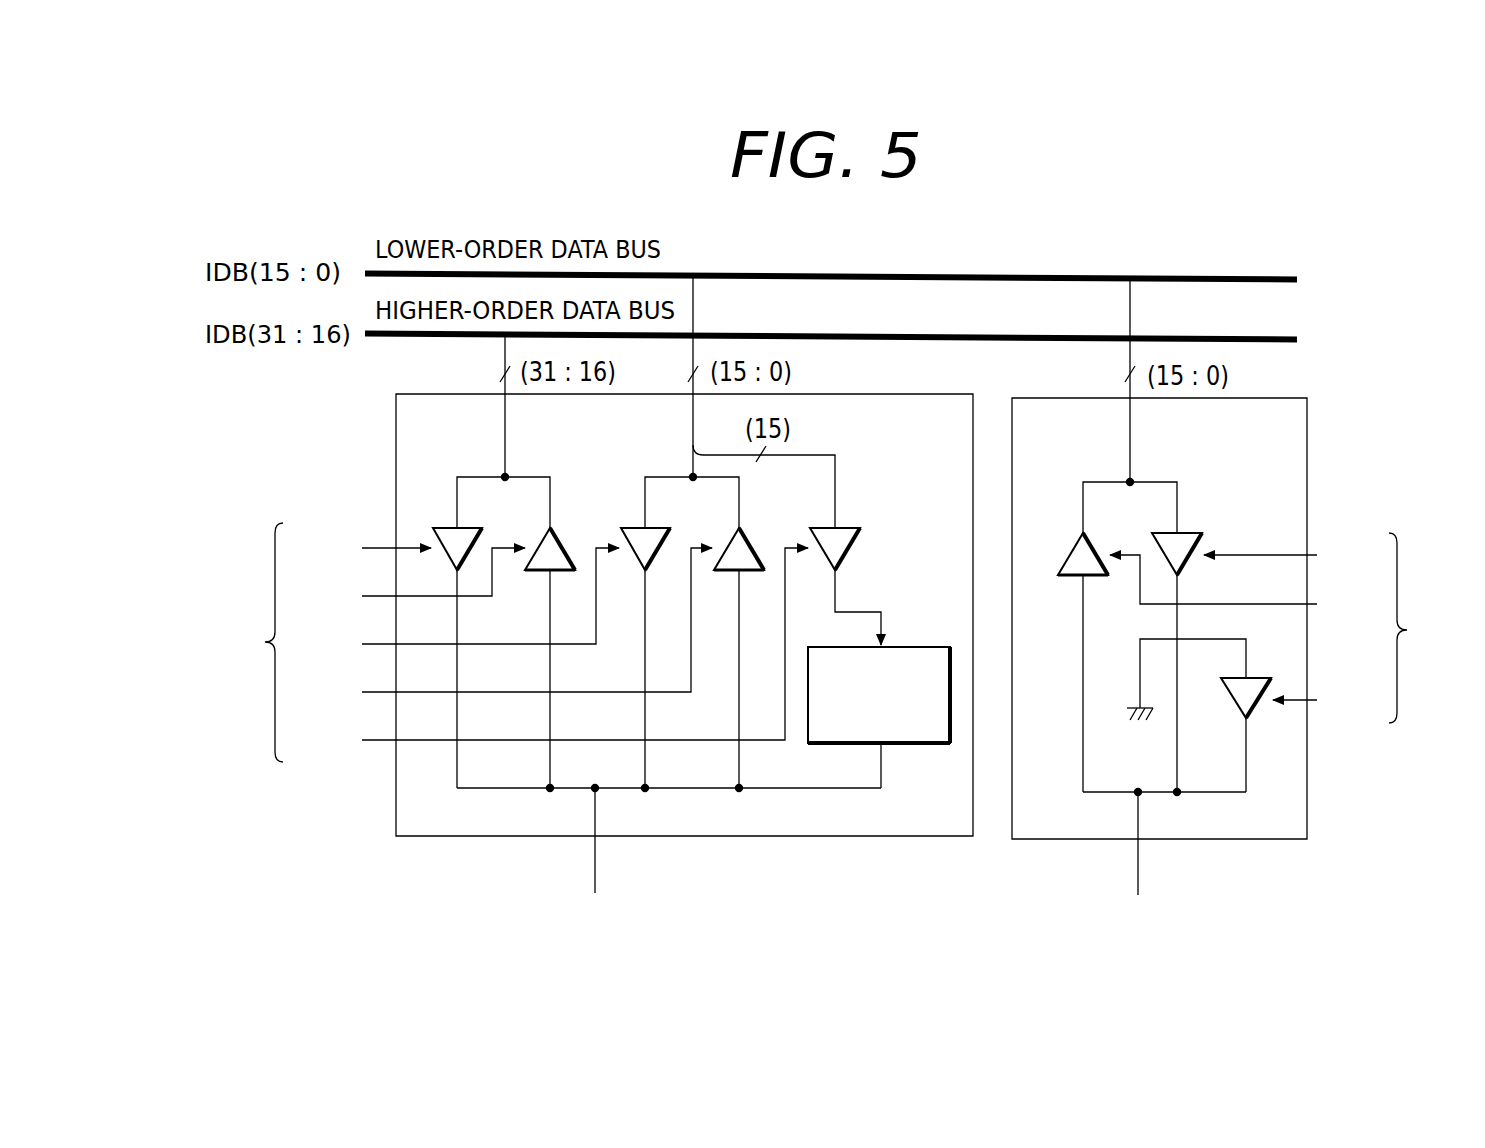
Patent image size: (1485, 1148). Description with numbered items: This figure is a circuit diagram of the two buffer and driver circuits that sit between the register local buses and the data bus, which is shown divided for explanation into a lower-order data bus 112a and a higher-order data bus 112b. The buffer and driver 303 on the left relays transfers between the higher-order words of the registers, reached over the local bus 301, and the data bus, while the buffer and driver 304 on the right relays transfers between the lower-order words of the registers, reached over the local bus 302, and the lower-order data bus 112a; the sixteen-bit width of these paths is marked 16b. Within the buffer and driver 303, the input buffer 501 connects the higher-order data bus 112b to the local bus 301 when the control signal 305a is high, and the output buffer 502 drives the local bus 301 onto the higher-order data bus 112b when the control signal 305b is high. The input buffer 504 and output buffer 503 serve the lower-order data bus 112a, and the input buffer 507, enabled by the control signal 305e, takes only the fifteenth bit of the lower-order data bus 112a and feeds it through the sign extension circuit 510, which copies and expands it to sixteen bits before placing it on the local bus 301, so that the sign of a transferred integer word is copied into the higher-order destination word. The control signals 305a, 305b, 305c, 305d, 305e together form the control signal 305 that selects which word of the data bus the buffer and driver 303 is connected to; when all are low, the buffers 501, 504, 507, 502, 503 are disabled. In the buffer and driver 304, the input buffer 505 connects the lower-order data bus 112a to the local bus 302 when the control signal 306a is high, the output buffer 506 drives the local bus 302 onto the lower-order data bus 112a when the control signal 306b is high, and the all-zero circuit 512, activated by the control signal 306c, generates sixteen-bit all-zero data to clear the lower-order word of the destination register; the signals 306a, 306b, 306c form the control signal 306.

The lower-order data bus 112a is at (1043, 275).
The higher-order data bus 112b is at (1043, 335).
The buffer and driver 303 is at (918, 395).
The buffer and driver 304 is at (1252, 398).
The local bus 301 is at (597, 818).
The local bus 302 is at (1140, 822).
The control signal 305 is at (247, 642).
The control signal 305a is at (364, 548).
The control signal 305b is at (411, 579).
The control signal 305c is at (458, 603).
The control signal 305d is at (504, 627).
The control signal 305e is at (552, 651).
The control signal 306 is at (1424, 628).
The control signal 306a is at (1293, 555).
The control signal 306b is at (1246, 587).
The control signal 306c is at (1328, 700).
The input buffer 501 is at (462, 526).
The output buffer 502 is at (553, 532).
The output buffer 503 is at (742, 532).
The input buffer 504 is at (650, 526).
The input buffer 505 is at (1180, 528).
The output buffer 506 is at (1068, 546).
The input buffer 507 is at (840, 526).
The sign extension circuit 510 is at (910, 648).
The all-zero circuit 512 is at (1248, 676).
The 16-bit width indication 16b is at (462, 758).